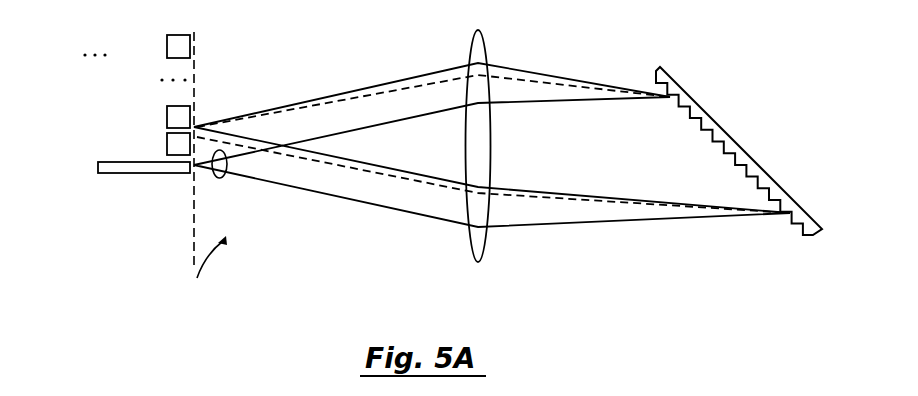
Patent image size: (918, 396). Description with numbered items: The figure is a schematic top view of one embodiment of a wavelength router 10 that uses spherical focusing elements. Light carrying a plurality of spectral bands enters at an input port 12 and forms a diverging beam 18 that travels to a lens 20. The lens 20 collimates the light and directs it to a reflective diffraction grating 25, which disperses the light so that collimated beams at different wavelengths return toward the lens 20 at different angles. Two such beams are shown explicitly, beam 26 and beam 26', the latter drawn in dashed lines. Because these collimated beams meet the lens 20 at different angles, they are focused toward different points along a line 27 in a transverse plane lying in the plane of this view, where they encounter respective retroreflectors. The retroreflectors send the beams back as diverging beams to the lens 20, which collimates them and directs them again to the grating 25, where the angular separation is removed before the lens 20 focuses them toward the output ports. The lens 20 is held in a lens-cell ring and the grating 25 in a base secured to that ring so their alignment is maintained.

The input port 12 is at (177, 173).
The line 27 is at (192, 230).
The wavelength router 10 is at (192, 275).
The diverging beam 18 is at (218, 177).
The beam 26 is at (492, 132).
The beam 26' is at (493, 112).
The lens 20 is at (467, 240).
The reflective diffraction grating 25 is at (667, 71).